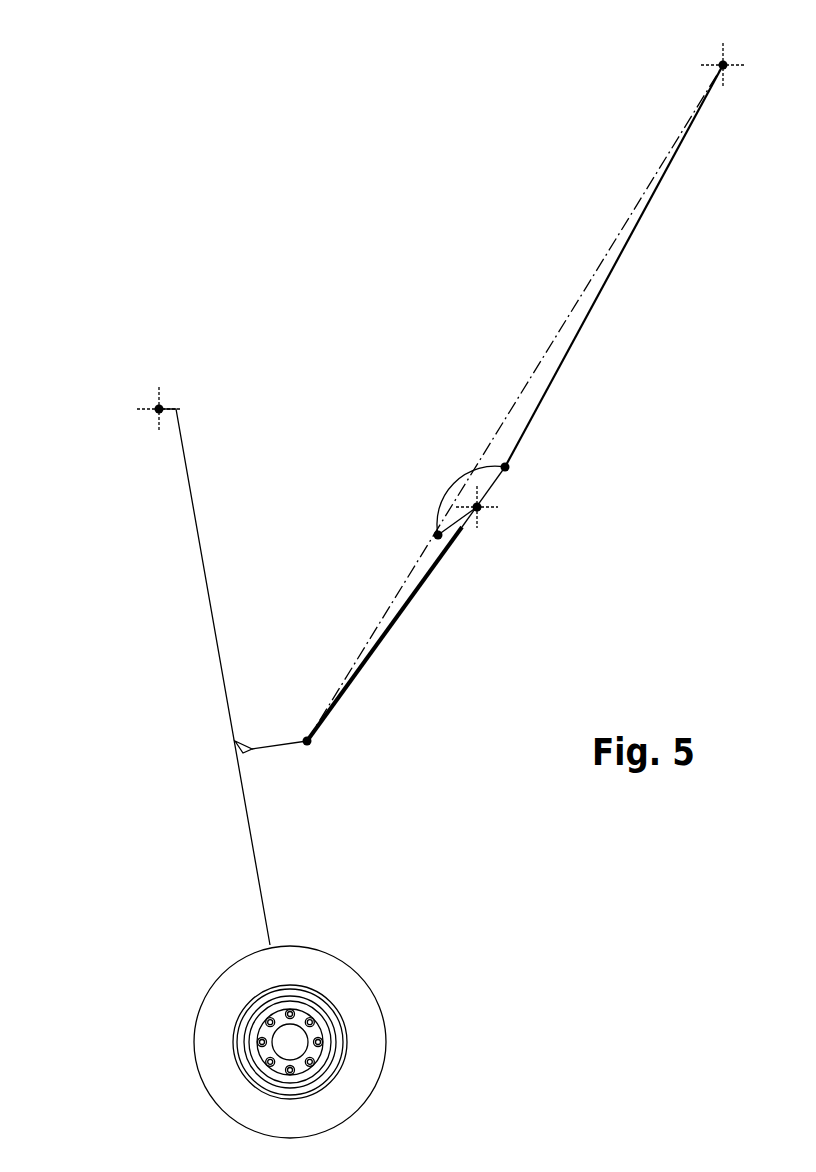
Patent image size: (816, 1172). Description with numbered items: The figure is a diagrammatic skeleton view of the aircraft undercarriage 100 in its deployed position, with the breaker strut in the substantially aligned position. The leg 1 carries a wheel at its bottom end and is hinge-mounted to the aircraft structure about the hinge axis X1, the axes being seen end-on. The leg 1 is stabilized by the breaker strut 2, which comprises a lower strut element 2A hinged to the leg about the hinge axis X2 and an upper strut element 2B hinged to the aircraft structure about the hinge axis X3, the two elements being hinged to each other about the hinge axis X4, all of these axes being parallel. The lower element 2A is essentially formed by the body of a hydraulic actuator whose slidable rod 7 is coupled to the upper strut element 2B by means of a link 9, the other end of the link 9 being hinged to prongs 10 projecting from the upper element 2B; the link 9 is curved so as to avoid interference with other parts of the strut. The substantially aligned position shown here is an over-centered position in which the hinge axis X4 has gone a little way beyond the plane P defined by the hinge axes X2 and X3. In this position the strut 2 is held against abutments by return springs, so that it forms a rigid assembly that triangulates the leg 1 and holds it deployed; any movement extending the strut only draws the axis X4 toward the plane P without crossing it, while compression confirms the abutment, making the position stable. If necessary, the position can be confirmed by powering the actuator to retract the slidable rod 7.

The aircraft undercarriage 100 is at (116, 542).
The leg 1 is at (210, 612).
The breaker strut 2 is at (382, 461).
The lower strut element 2A is at (411, 598).
The upper strut element 2B is at (607, 267).
The slidable rod 7 is at (507, 472).
The link 9 is at (455, 480).
The prongs 10 is at (436, 538).
The plane P is at (527, 383).
The hinge axis X1 is at (159, 409).
The hinge axis X2 is at (307, 745).
The hinge axis X3 is at (723, 65).
The hinge axis X4 is at (479, 509).